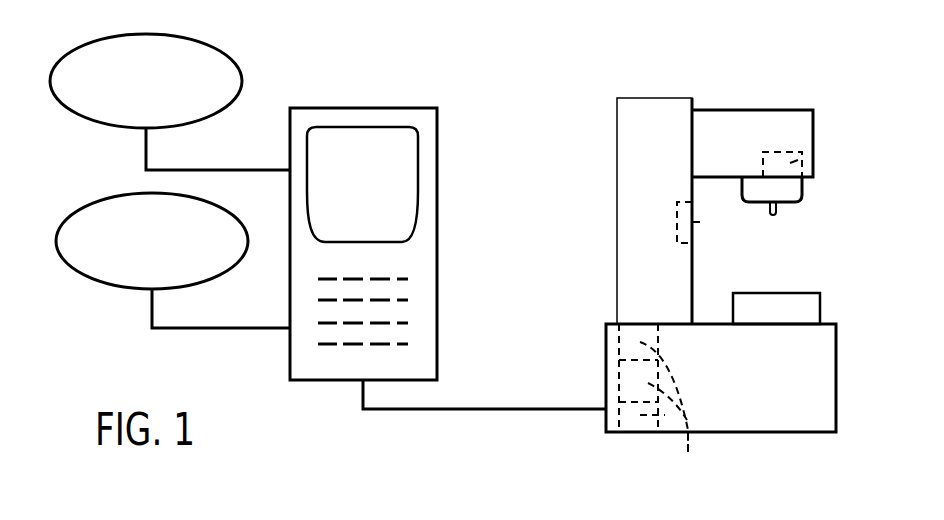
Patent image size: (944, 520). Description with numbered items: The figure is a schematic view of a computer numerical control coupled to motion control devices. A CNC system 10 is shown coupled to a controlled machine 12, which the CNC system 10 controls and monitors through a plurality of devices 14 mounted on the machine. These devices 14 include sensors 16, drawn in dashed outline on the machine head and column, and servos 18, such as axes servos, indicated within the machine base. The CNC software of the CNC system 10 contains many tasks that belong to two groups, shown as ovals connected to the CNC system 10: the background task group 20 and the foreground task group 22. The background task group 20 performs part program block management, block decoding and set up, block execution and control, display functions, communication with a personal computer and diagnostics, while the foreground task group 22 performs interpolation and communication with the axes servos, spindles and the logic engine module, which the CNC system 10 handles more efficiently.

The CNC system 10 is at (327, 72).
The controlled machine 12 is at (740, 80).
The devices 14 is at (782, 143).
The sensors 16 is at (802, 162).
The servos 18 is at (694, 459).
The background task group 20 is at (87, 44).
The foreground task group 22 is at (95, 202).